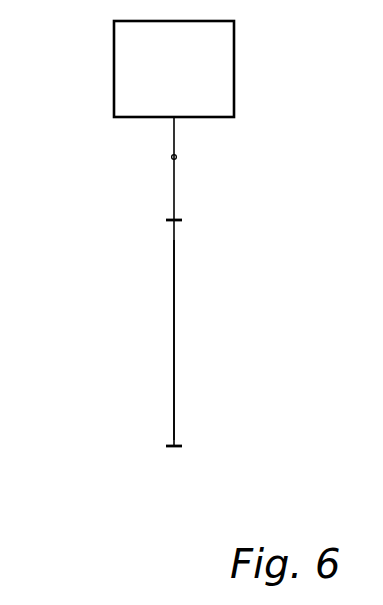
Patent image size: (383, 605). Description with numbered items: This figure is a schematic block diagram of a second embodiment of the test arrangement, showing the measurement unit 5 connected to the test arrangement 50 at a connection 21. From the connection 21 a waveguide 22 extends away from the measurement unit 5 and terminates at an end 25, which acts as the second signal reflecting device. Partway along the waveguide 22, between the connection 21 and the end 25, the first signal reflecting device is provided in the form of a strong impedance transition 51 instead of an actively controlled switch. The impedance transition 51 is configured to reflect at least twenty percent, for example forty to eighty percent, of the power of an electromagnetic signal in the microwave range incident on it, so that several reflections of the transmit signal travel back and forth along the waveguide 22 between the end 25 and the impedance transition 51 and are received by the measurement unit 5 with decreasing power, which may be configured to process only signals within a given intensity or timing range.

The measurement unit 5 is at (165, 73).
The test arrangement 50 is at (130, 283).
The waveguide 22 is at (174, 356).
The connection 21 is at (177, 158).
The impedance transition 51 is at (188, 225).
The end of the waveguide 25 is at (190, 452).